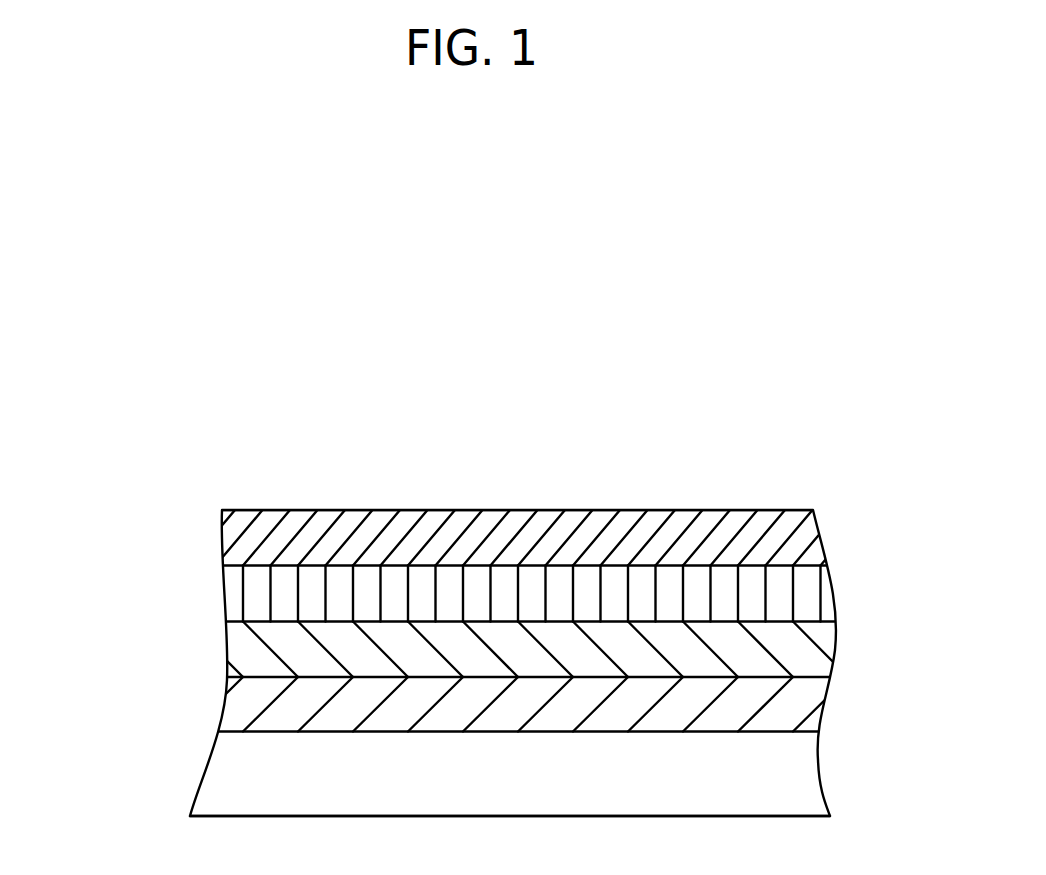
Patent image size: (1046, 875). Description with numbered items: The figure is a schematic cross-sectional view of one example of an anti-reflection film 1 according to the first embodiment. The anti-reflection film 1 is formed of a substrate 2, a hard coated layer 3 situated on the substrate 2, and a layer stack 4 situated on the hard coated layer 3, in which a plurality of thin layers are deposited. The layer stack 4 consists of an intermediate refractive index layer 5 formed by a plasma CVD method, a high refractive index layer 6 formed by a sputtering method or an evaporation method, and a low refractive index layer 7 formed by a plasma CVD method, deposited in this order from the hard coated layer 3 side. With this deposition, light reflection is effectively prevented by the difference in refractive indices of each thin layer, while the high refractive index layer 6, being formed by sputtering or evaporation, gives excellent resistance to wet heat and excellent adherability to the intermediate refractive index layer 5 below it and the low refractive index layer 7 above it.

The anti-reflection film 1 is at (732, 455).
The substrate 2 is at (808, 777).
The hard coated layer 3 is at (808, 702).
The layer stack 4 is at (468, 593).
The intermediate refractive index layer 5 is at (245, 650).
The high refractive index layer 6 is at (242, 597).
The low refractive index layer 7 is at (522, 538).